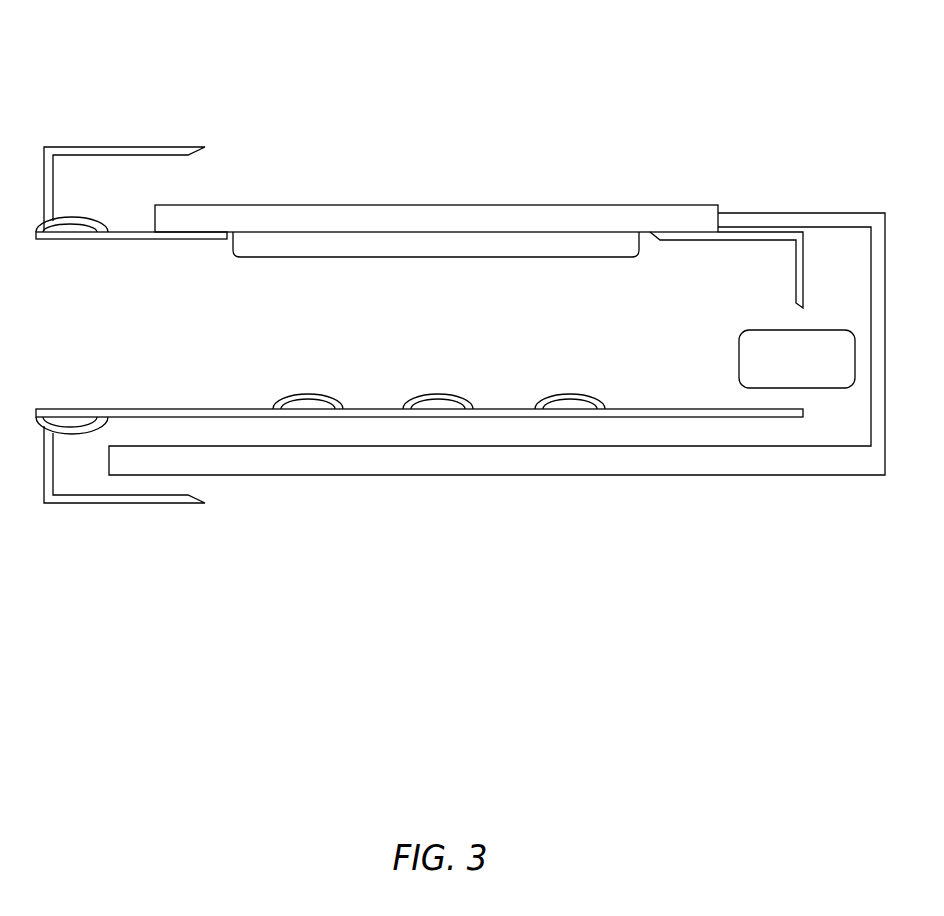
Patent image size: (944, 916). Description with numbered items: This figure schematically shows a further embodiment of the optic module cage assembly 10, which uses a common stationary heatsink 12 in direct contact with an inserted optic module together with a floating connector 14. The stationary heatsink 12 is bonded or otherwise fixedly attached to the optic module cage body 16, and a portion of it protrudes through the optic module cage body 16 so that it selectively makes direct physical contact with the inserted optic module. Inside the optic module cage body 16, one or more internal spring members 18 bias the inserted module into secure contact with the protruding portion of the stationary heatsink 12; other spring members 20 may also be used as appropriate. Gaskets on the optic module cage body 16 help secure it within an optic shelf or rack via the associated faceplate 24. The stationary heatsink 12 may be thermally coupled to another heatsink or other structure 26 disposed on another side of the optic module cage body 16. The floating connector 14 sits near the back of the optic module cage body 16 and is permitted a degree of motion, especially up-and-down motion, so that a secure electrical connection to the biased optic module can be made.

The optic module cage assembly 10 is at (473, 160).
The stationary heatsink 12 is at (618, 204).
The floating connector 14 is at (812, 330).
The optic module cage body 16 is at (786, 230).
The internal spring members 18 is at (312, 415).
The spring members 20 is at (79, 438).
The faceplate 24 is at (125, 147).
The other heatsink or other structure 26 is at (648, 475).